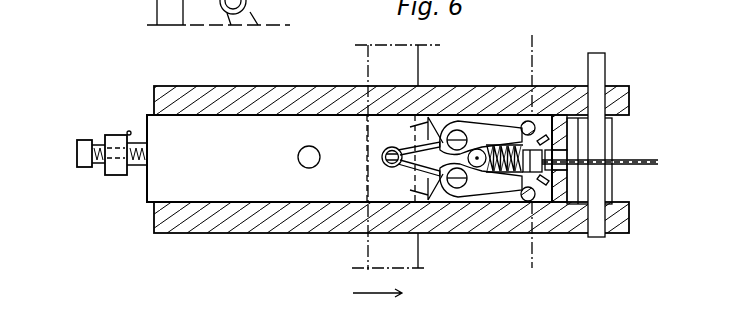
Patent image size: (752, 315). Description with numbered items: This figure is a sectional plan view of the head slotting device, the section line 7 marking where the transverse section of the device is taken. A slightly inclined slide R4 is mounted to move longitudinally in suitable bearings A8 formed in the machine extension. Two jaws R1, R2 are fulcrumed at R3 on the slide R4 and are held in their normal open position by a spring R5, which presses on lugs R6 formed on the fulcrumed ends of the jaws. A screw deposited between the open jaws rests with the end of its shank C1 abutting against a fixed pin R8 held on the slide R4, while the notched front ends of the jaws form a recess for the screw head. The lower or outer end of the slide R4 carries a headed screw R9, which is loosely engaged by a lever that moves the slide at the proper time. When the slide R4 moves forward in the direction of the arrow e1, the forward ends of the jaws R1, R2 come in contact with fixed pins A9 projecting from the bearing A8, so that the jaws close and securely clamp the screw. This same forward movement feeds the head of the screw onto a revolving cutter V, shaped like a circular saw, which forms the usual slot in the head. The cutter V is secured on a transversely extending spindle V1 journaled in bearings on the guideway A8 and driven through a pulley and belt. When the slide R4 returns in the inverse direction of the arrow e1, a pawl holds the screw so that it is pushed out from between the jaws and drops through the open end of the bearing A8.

The slide R4 is at (327, 193).
The bearing A8 is at (629, 222).
The fixed pins A9 is at (525, 195).
The spindle V1 is at (605, 70).
The revolving cutter V is at (662, 146).
The shank C1 is at (512, 195).
The jaw R1 is at (495, 113).
The jaw R2 is at (488, 192).
The fixed pin R8 is at (477, 113).
The lugs R6 is at (420, 113).
The fulcrum R3 is at (455, 113).
The spring R5 is at (413, 167).
The headed screw R9 is at (74, 152).
The section line 7 is at (447, 162).
The arrow e1 is at (377, 302).